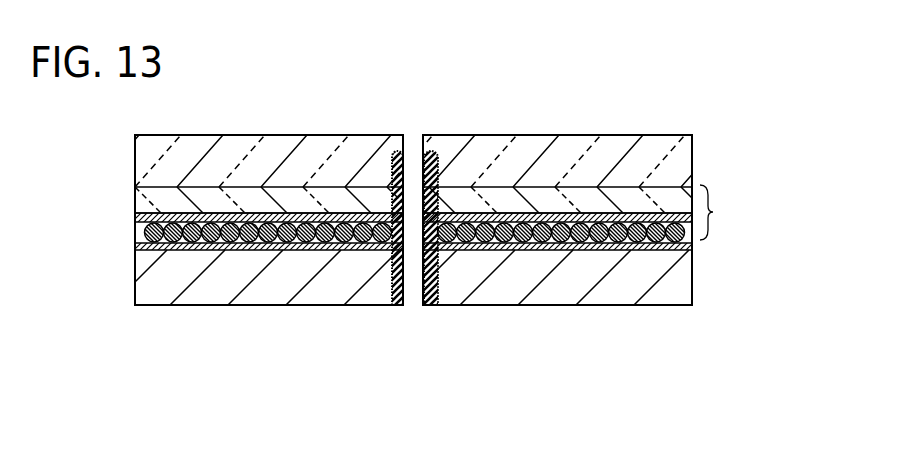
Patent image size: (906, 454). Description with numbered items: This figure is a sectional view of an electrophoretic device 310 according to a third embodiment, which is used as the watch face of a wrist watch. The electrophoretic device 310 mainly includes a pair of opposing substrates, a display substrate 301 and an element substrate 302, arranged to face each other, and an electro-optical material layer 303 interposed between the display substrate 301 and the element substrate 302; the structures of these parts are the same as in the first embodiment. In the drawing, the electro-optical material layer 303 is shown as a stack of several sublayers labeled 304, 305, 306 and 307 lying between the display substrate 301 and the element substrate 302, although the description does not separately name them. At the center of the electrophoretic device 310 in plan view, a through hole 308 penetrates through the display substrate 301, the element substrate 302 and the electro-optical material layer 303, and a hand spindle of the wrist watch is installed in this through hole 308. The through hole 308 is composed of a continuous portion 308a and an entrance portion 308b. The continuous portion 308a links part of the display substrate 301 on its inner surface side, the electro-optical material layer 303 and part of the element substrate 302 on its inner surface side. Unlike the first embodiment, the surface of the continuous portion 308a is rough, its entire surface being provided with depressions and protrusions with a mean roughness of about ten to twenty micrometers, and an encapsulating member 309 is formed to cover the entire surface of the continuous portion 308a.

The display substrate 301 is at (673, 153).
The element substrate 302 is at (675, 275).
The electro-optical material layer 303 is at (713, 212).
The electrode layer 304 is at (135, 203).
The adhesive layer 305 is at (135, 218).
The microcapsule layer 306 is at (145, 233).
The adhesive layer 307 is at (135, 247).
The through hole 308 is at (416, 200).
The continuous portion 308a is at (420, 308).
The entrance portion 308b is at (409, 142).
The encapsulating member 309 is at (397, 307).
The electrophoretic device 310 is at (609, 97).